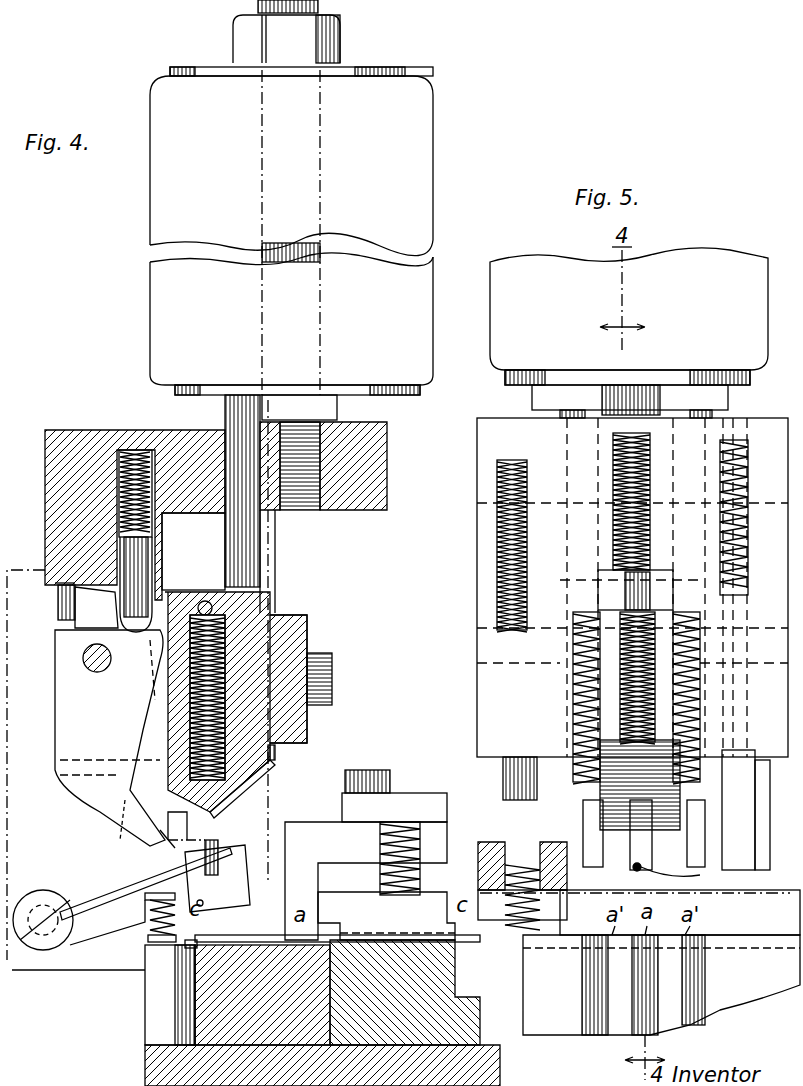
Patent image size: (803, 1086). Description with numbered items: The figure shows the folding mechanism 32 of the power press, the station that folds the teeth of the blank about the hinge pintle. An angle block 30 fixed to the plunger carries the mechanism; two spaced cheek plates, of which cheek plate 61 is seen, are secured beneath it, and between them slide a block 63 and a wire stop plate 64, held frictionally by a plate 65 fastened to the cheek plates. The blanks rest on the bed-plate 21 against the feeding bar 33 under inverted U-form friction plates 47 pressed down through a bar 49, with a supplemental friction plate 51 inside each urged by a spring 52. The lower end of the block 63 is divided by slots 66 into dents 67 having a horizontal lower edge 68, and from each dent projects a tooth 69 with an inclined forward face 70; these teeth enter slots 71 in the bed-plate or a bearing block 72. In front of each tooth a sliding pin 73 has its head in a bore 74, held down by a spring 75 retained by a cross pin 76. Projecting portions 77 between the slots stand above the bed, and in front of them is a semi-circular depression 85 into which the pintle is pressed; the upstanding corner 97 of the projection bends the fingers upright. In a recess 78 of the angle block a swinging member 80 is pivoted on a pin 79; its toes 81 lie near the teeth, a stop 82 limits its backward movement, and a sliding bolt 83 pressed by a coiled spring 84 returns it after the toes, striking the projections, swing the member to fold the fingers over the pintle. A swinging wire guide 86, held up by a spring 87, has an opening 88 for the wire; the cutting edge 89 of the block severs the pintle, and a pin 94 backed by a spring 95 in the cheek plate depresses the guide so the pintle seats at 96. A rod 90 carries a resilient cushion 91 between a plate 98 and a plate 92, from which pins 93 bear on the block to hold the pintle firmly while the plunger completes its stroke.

In FIG. 4, the bed-plate 21 is at (322, 1065).
In FIG. 5, the bed-plate 21 is at (661, 985).
In FIG. 4, the angle block 30 is at (378, 475).
In FIG. 5, the angle block 30 is at (478, 572).
In FIG. 4, the folding mechanism 32 is at (312, 575).
In FIG. 5, the folding mechanism 32 is at (455, 685).
In FIG. 4, the feeding bar 33 is at (405, 992).
In FIG. 4, the friction plates 47 is at (366, 881).
In FIG. 4, the pressure bar 49 is at (394, 796).
In FIG. 4, the supplemental friction plate 51 is at (386, 916).
In FIG. 4, the spring 52 is at (385, 880).
In FIG. 4, the cheek plate 61 is at (276, 548).
In FIG. 4, the block 63 is at (255, 718).
In FIG. 5, the block 63 is at (560, 768).
In FIG. 5, the wire stop plate 64 is at (738, 810).
In FIG. 4, the plate 65 is at (308, 620).
In FIG. 4, the slots 66 is at (272, 760).
In FIG. 5, the slots 66 is at (652, 846).
In FIG. 4, the dents 67 is at (148, 832).
In FIG. 4, the horizontal lower edge 68 is at (228, 840).
In FIG. 4, the tooth 69 is at (172, 850).
In FIG. 5, the tooth 69 is at (644, 847).
In FIG. 4, the inclined forward face 70 is at (185, 865).
In FIG. 4, the slots 71 is at (175, 1012).
In FIG. 5, the slots 71 is at (690, 955).
In FIG. 4, the bearing block 72 is at (262, 995).
In FIG. 4, the pin 73 is at (220, 862).
In FIG. 4, the bore 74 is at (225, 672).
In FIG. 5, the bore 74 is at (575, 690).
In FIG. 4, the spring 75 is at (220, 700).
In FIG. 5, the spring 75 is at (580, 712).
In FIG. 4, the cross pin 76 is at (205, 600).
In FIG. 4, the projecting portions 77 is at (145, 985).
In FIG. 5, the projecting portions 77 is at (643, 985).
In FIG. 4, the recess 78 is at (58, 607).
In FIG. 5, the recess 78 is at (608, 572).
In FIG. 4, the pin 79 is at (95, 668).
In FIG. 4, the swinging member 80 is at (110, 738).
In FIG. 5, the swinging member 80 is at (615, 790).
In FIG. 4, the toes 81 is at (130, 813).
In FIG. 5, the toes 81 is at (690, 830).
In FIG. 4, the stop 82 is at (58, 582).
In FIG. 5, the stop 82 is at (636, 575).
In FIG. 4, the sliding bolt 83 is at (96, 607).
In FIG. 4, the coiled spring 84 is at (130, 450).
In FIG. 5, the coiled spring 84 is at (625, 455).
In FIG. 4, the semi-circular depression 85 is at (205, 948).
In FIG. 5, the semi-circular depression 85 is at (568, 948).
In FIG. 4, the swinging wire guide 86 is at (80, 905).
In FIG. 5, the swinging wire guide 86 is at (487, 842).
In FIG. 4, the spring 87 is at (150, 910).
In FIG. 5, the spring 87 is at (510, 882).
In FIG. 4, the opening 88 is at (205, 905).
In FIG. 5, the cutting edge 89 is at (578, 815).
In FIG. 4, the rod 90 is at (322, 263).
In FIG. 5, the rod 90 is at (630, 390).
In FIG. 4, the resilient cushion 91 is at (291, 232).
In FIG. 5, the resilient cushion 91 is at (629, 309).
In FIG. 4, the plate 92 is at (420, 386).
In FIG. 5, the plate 92 is at (540, 384).
In FIG. 4, the pins 93 is at (240, 525).
In FIG. 5, the pins 93 is at (585, 412).
In FIG. 5, the pin 94 is at (515, 780).
In FIG. 5, the spring 95 is at (497, 528).
In FIG. 4, the seat 96 is at (186, 824).
In FIG. 4, the upstanding corner 97 is at (190, 950).
In FIG. 4, the plate 98 is at (405, 69).